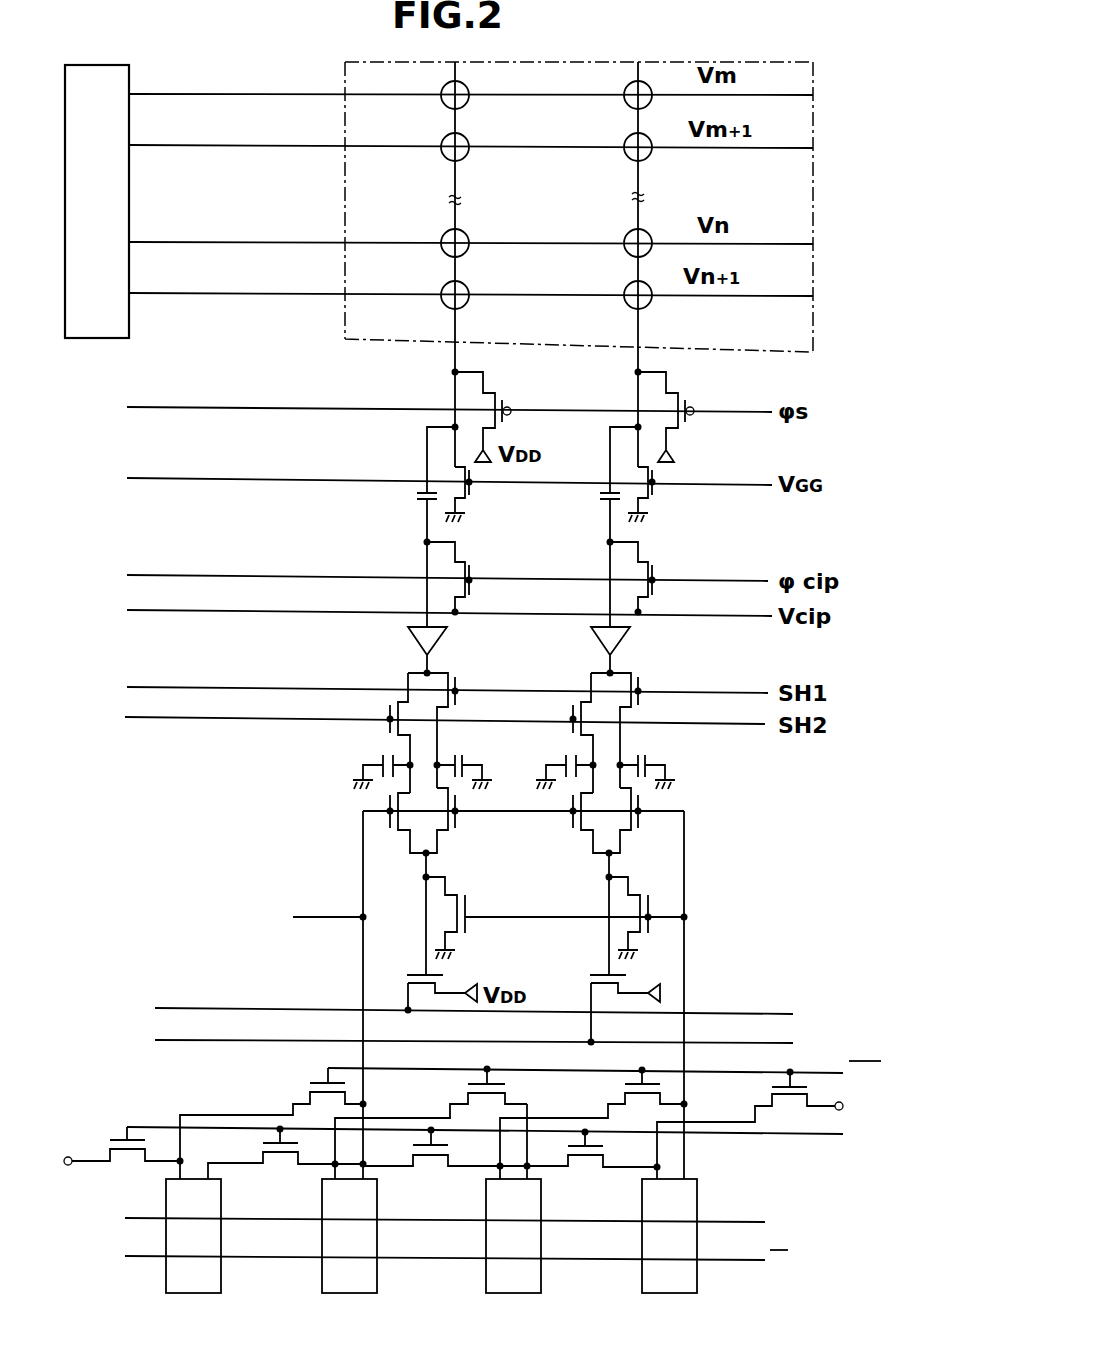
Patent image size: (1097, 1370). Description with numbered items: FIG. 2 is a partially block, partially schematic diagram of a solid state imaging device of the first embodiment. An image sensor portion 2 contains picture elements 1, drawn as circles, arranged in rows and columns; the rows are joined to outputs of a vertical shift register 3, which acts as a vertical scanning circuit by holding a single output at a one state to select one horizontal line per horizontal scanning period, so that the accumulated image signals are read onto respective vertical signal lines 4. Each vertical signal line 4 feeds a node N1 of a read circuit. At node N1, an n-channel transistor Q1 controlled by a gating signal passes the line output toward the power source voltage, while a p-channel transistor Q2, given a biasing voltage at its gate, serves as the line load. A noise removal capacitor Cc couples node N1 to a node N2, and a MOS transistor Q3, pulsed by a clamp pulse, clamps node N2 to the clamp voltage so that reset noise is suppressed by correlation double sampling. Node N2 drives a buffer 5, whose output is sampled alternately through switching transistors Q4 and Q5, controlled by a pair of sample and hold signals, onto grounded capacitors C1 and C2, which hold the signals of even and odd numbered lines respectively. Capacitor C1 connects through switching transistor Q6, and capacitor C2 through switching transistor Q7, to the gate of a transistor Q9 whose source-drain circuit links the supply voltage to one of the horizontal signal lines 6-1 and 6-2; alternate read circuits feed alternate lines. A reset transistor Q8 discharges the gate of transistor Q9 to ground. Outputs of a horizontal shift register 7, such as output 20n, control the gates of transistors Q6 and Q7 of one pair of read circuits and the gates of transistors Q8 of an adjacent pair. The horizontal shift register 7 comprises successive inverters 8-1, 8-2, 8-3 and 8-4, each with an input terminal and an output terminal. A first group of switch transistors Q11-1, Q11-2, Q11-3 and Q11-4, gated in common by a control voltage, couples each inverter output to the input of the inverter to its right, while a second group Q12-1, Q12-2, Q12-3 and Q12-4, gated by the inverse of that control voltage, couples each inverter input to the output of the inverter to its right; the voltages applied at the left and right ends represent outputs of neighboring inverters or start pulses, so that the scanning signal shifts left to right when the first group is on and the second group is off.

The picture element 1 is at (448, 103).
The image sensor portion 2 is at (340, 326).
The vertical shift register 3 is at (98, 339).
The vertical signal line 4 is at (458, 184).
The buffer 5 is at (415, 637).
The horizontal signal line 6-1 is at (499, 1014).
The horizontal signal line 6-2 is at (499, 1044).
The horizontal shift register 7 is at (147, 1106).
The inverter 8-1 is at (166, 1275).
The inverter 8-2 is at (322, 1275).
The inverter 8-3 is at (486, 1275).
The inverter 8-4 is at (642, 1275).
The output of horizontal shift register 20n is at (363, 958).
The n-channel transistor Q1 is at (490, 412).
The p-channel transistor Q2 is at (480, 494).
The MOS transistor Q3 is at (471, 579).
The MOS switching transistor Q4 is at (454, 723).
The MOS switching transistor Q5 is at (378, 733).
The MOS switching transistor Q6 is at (463, 820).
The MOS switching transistor Q7 is at (398, 826).
The MOS reset transistor Q8 is at (466, 917).
The MOS transistor Q9 is at (429, 977).
The MOS switch transistor Q11-1 is at (129, 1165).
The MOS switch transistor Q11-2 is at (282, 1166).
The MOS switch transistor Q11-3 is at (432, 1168).
The MOS switch transistor Q11-4 is at (587, 1169).
The switch transistor Q12-1 is at (327, 1095).
The switch transistor Q12-2 is at (486, 1096).
The switch transistor Q12-3 is at (641, 1096).
The switch transistor Q12-4 is at (784, 1108).
The node N1 is at (453, 425).
The node N2 is at (425, 543).
The noise removal capacitor Cc is at (406, 514).
The capacitor C1 is at (467, 760).
The capacitor C2 is at (378, 760).